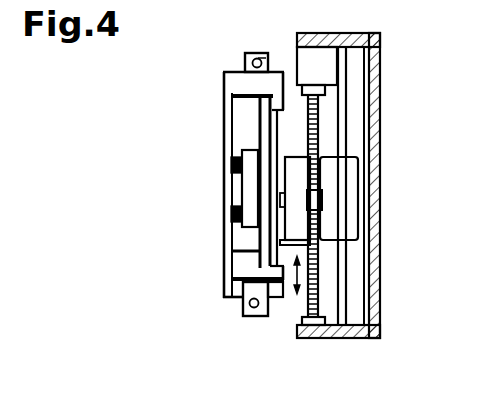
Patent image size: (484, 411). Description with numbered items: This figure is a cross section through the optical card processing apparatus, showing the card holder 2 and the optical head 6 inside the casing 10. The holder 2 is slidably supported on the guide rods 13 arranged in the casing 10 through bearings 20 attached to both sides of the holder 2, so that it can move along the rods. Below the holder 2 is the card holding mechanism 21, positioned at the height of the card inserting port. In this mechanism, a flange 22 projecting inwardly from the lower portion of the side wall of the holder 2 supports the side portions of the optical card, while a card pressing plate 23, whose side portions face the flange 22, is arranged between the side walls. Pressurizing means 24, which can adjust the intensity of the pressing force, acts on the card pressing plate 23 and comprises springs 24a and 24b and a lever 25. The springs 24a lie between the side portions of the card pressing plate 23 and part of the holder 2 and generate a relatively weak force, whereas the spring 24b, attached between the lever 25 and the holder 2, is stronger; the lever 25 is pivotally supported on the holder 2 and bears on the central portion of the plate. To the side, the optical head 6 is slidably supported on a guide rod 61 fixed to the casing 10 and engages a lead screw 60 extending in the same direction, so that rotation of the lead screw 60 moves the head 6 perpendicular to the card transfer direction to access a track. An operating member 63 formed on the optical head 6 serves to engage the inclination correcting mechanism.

The card holder 2 is at (233, 243).
The optical head 6 is at (350, 192).
The casing 10 is at (382, 61).
The guide rods 13 is at (250, 58).
The bearings 20 is at (263, 53).
The card holding mechanism 21 is at (282, 126).
The flange 22 is at (268, 294).
The card pressing plate 23 is at (246, 229).
The pressurizing means 24 is at (242, 180).
The springs 24a is at (250, 110).
The spring 24b is at (236, 205).
The lever 25 is at (235, 160).
The lead screw 60 is at (324, 99).
The guide rod 61 is at (343, 131).
The operating member 63 is at (292, 296).